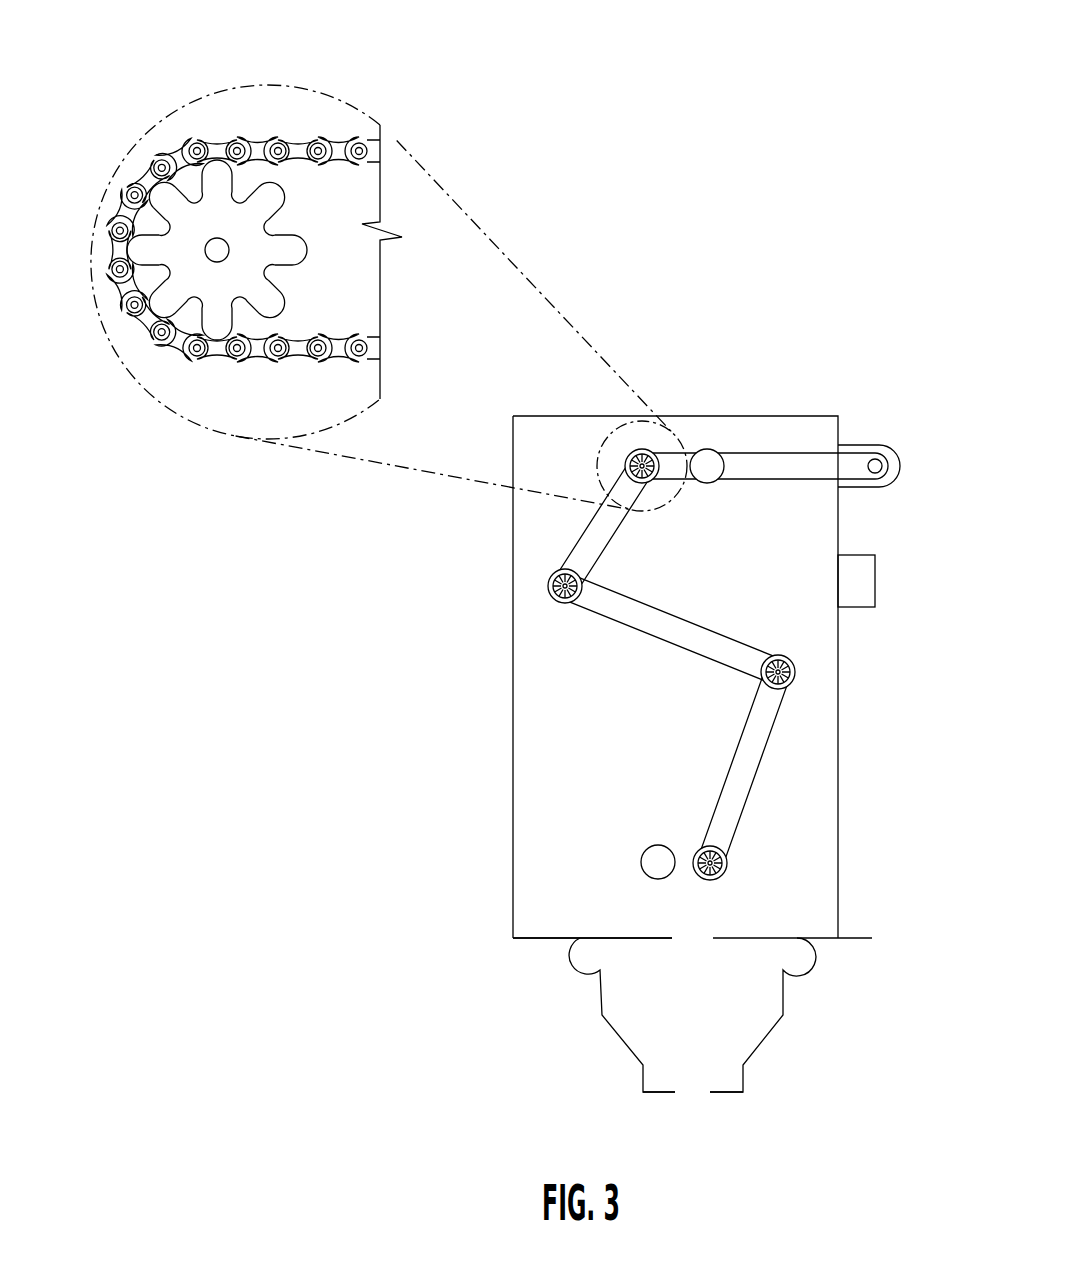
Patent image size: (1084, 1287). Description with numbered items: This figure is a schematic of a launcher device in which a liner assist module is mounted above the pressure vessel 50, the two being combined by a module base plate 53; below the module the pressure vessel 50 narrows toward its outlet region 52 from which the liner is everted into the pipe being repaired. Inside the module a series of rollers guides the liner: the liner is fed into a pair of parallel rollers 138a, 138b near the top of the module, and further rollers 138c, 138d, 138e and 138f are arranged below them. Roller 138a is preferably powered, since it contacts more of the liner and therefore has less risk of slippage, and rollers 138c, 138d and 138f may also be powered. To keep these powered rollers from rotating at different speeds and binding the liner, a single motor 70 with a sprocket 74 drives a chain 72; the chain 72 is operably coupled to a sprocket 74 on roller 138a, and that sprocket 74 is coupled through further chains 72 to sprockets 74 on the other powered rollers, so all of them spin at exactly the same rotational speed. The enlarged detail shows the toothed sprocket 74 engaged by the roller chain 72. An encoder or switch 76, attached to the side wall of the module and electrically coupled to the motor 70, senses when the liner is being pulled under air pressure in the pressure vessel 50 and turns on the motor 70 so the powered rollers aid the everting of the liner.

The pressure vessel 50 is at (763, 1037).
The nozzle outlet 52 is at (662, 1093).
The module base plate 53 is at (542, 939).
The motor 70 is at (890, 447).
The chain 72 is at (297, 147).
The sprocket 74 is at (118, 288).
The encoder 76 is at (876, 577).
The roller 138a is at (643, 450).
The roller 138b is at (703, 450).
The roller 138c is at (549, 582).
The roller 138d is at (794, 663).
The roller 138e is at (642, 863).
The roller 138f is at (727, 865).